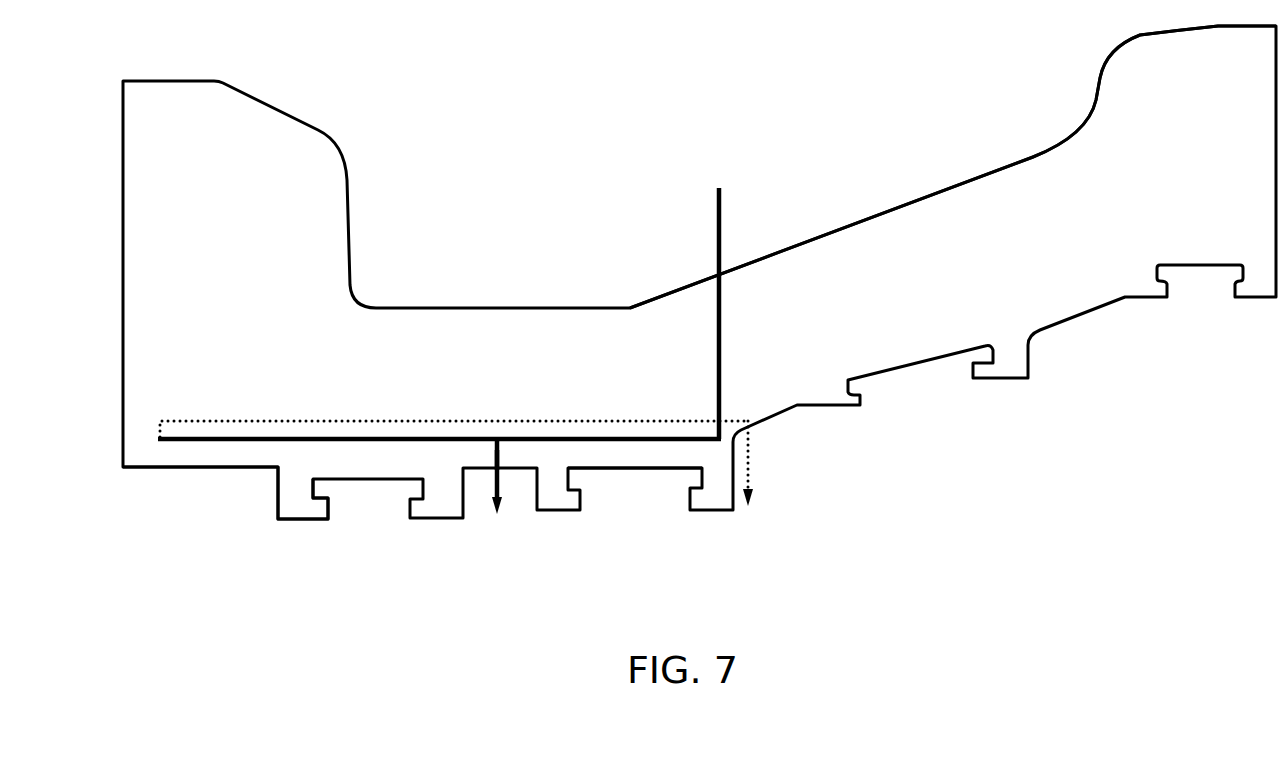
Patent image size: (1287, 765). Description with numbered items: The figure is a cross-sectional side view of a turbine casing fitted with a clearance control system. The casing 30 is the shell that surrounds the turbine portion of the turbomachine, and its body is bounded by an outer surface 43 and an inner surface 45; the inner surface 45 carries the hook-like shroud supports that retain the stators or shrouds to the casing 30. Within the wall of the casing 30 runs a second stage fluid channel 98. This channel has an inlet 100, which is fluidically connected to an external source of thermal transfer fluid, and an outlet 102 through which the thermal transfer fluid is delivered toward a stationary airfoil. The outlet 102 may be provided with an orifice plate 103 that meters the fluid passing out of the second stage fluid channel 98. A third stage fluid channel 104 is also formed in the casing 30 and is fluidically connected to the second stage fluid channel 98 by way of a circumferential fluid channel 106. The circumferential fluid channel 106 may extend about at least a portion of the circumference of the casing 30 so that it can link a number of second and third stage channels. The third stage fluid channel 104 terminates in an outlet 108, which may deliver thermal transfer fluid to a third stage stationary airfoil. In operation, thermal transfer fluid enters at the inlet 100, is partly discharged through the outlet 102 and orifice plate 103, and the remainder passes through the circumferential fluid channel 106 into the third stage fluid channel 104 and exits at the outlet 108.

The casing 30 is at (906, 116).
The outer surface 43 is at (1033, 153).
The inner surface 45 is at (297, 522).
The second stage fluid channel 98 is at (609, 452).
The inlet 100 is at (719, 215).
The outlet 102 is at (493, 443).
The orifice plate 103 is at (500, 457).
The third stage fluid channel 104 is at (294, 389).
The circumferential fluid channel 106 is at (160, 422).
The outlet 108 is at (752, 458).